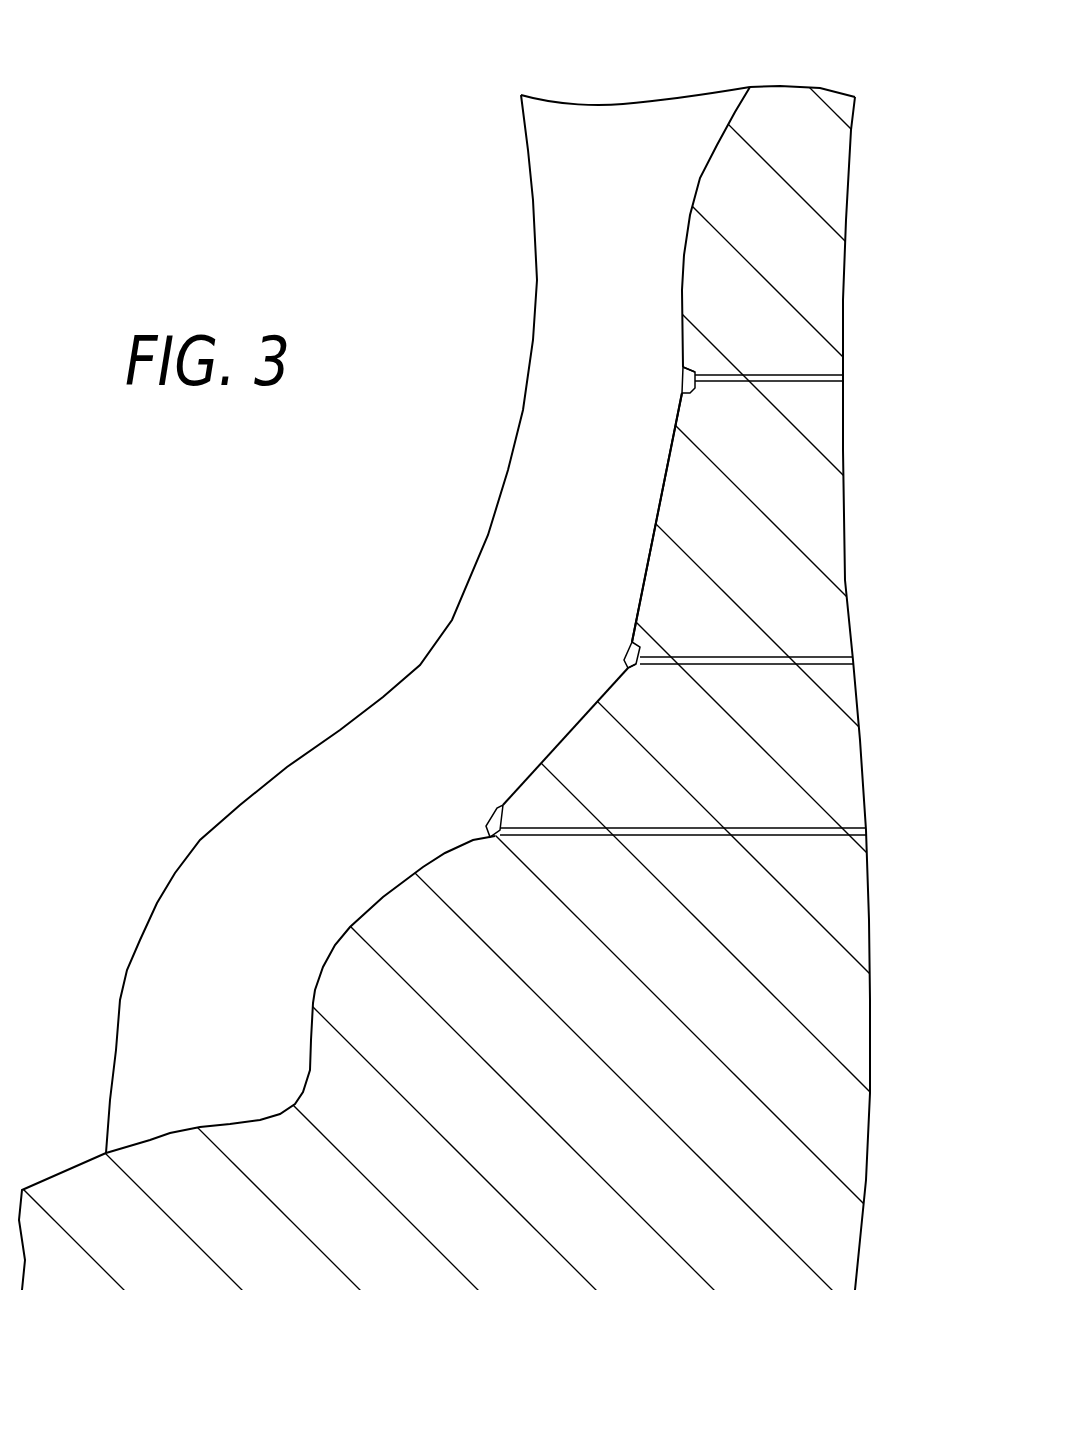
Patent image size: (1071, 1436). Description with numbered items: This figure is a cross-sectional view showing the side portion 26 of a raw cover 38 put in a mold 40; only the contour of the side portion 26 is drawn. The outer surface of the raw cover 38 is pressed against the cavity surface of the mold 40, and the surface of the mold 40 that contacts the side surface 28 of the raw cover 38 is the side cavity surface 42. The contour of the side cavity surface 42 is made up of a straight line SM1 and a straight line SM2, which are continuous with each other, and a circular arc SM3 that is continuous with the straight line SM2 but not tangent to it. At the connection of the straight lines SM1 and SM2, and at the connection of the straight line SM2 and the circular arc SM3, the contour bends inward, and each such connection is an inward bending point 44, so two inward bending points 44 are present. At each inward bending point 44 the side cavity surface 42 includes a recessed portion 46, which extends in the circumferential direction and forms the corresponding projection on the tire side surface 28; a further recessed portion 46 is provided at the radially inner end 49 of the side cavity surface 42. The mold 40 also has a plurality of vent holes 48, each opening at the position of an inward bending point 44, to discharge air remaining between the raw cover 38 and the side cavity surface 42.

The side portion 26 is at (284, 768).
The side surface 28 is at (650, 573).
The raw cover 38 is at (625, 101).
The mold 40 is at (800, 89).
The side cavity surface 42 is at (650, 542).
The inward bending point 44 is at (688, 366).
The recessed portion 46 is at (683, 380).
The vent hole 48 is at (812, 380).
The radially inner end 49 is at (487, 840).
The straight line SM1 is at (563, 736).
The straight line SM2 is at (662, 472).
The circular arc SM3 is at (677, 292).